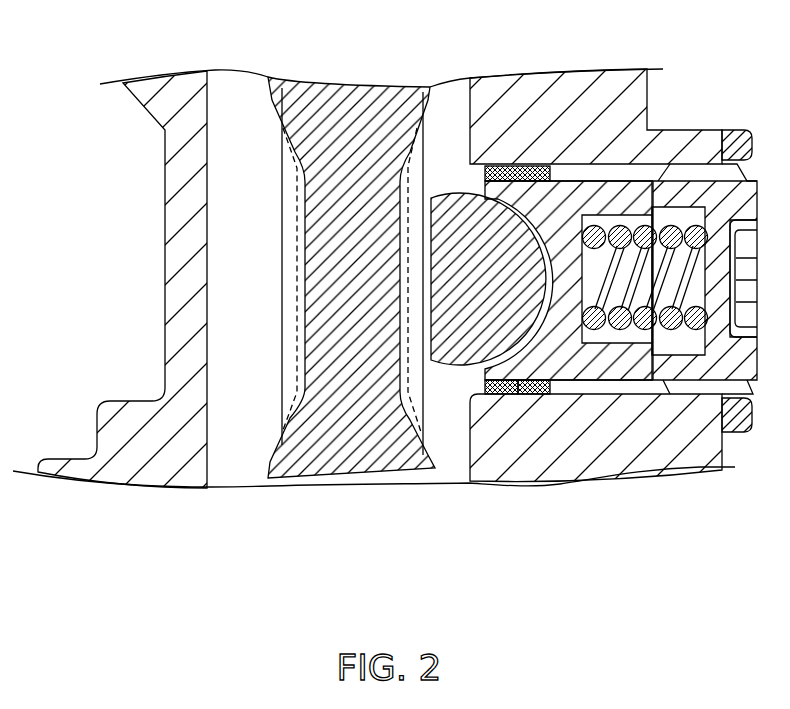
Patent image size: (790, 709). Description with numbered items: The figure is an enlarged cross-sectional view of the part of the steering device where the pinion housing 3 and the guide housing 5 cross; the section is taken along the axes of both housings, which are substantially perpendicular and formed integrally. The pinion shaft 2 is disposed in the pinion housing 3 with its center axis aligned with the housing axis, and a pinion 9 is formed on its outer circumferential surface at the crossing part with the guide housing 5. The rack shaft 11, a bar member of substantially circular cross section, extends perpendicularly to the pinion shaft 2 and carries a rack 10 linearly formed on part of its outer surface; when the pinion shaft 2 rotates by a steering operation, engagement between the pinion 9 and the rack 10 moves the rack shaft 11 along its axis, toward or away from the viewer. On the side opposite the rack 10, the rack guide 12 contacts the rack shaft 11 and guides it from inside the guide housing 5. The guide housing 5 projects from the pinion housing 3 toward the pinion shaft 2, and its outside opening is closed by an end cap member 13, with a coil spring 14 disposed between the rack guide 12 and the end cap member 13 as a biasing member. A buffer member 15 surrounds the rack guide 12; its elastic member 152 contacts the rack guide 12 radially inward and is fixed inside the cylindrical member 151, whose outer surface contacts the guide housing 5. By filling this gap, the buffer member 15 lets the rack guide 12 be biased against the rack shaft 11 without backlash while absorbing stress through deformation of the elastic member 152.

The pinion shaft 2 is at (350, 88).
The pinion housing 3 is at (165, 186).
The guide housing 5 is at (703, 140).
The pinion 9 is at (283, 372).
The rack 10 is at (430, 248).
The rack shaft 11 is at (457, 192).
The rack guide 12 is at (585, 205).
The end cap member 13 is at (737, 190).
The coil spring 14 is at (663, 353).
The buffer member 15 is at (485, 551).
The cylindrical member 151 is at (482, 390).
The elastic member 152 is at (552, 390).